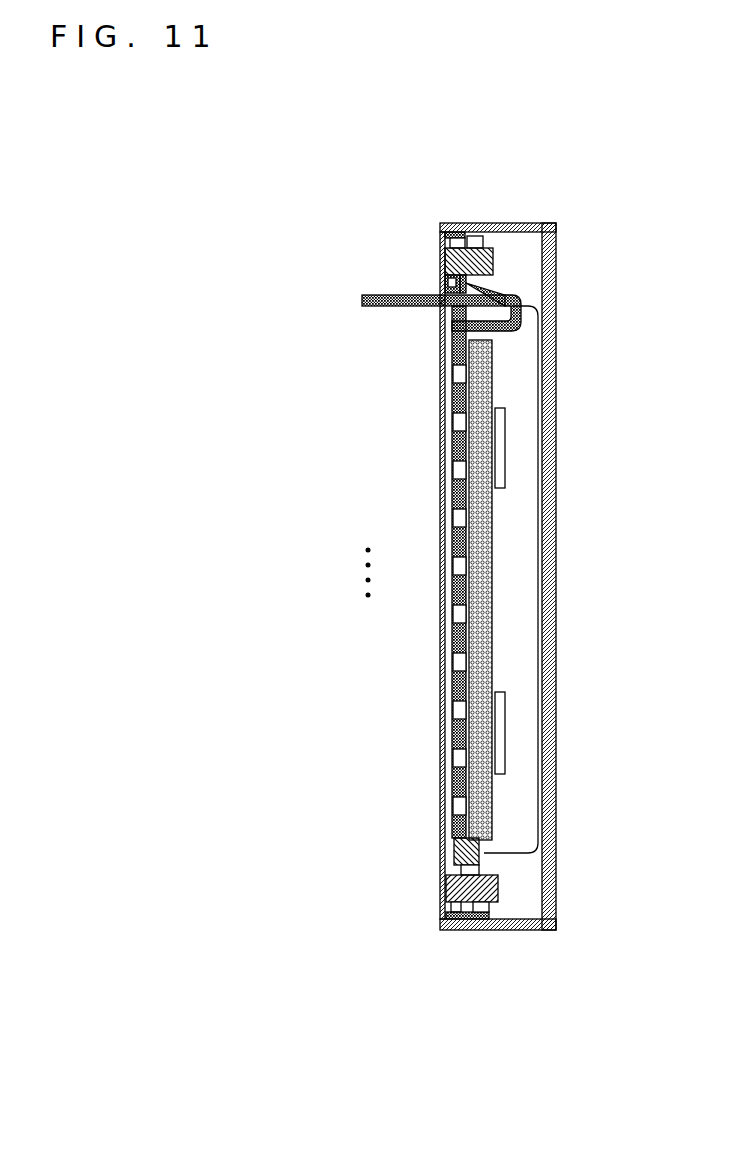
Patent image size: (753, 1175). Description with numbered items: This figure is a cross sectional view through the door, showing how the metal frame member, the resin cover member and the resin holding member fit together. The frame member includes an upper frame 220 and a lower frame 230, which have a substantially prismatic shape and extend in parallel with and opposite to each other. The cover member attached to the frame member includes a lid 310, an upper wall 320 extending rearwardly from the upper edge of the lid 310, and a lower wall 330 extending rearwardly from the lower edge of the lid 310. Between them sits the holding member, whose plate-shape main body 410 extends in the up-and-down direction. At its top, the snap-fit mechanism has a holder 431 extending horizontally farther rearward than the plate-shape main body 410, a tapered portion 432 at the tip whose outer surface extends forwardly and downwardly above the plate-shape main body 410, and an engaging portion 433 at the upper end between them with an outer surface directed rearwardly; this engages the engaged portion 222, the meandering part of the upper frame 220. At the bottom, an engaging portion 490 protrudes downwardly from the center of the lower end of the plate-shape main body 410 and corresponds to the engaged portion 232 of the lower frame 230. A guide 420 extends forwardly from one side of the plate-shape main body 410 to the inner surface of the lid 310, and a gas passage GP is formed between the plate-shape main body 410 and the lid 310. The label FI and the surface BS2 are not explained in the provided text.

The upper frame 220 is at (455, 232).
The upper wall 320 is at (539, 224).
The engaging portion 433 is at (447, 280).
The engaged portion 222 is at (457, 290).
The tapered portion 432 is at (499, 291).
The holder 431 is at (403, 307).
The lid 310 is at (557, 558).
The gas passage GP is at (517, 567).
The optical filter plate FI is at (493, 630).
The plate-shape main body 410 is at (458, 823).
The engaged portion 232 is at (458, 862).
The guide 420 is at (530, 783).
The engaging portion 490 is at (452, 897).
The base surface BS2 is at (456, 912).
The lower frame 230 is at (483, 912).
The lower wall 330 is at (538, 930).